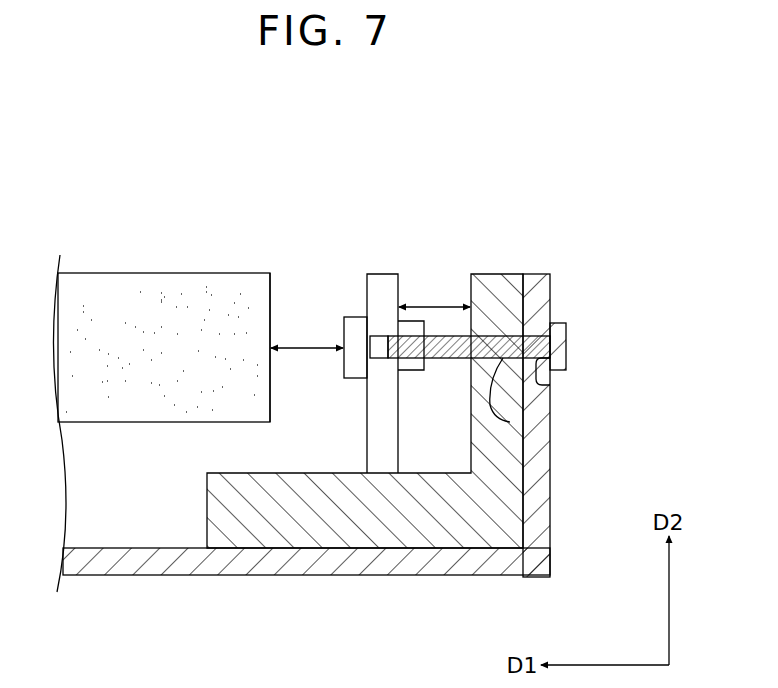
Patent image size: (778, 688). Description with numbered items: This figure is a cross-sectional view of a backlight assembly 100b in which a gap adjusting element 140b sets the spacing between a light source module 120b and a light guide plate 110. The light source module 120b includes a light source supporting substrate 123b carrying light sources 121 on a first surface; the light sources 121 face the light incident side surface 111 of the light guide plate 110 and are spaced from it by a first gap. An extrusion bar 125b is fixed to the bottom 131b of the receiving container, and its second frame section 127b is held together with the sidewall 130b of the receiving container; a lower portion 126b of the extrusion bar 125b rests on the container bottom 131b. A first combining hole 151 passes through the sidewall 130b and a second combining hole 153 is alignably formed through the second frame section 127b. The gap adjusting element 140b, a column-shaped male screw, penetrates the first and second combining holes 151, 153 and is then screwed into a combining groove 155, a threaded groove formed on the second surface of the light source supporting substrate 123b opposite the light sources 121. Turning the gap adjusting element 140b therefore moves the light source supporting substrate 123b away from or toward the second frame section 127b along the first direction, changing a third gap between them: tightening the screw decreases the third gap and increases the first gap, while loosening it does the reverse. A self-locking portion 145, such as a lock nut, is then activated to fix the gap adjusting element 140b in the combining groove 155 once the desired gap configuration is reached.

The backlight assembly 100b is at (321, 174).
The light guide plate 110 is at (166, 284).
The light incident side surface 111 is at (271, 284).
The light source module 120b is at (337, 218).
The light source 121 is at (348, 318).
The light source supporting substrate 123b is at (397, 290).
The extrusion bar 125b is at (483, 285).
The bottom support portion 126b is at (268, 530).
The second frame section 127b is at (508, 493).
The sidewall 130b is at (529, 290).
The bottom frame portion 131b is at (104, 548).
The fastening bolt 140b is at (567, 346).
The self-locking portion 145 is at (410, 370).
The first combining hole 151 is at (541, 378).
The second combining hole 153 is at (492, 412).
The combining groove 155 is at (381, 360).